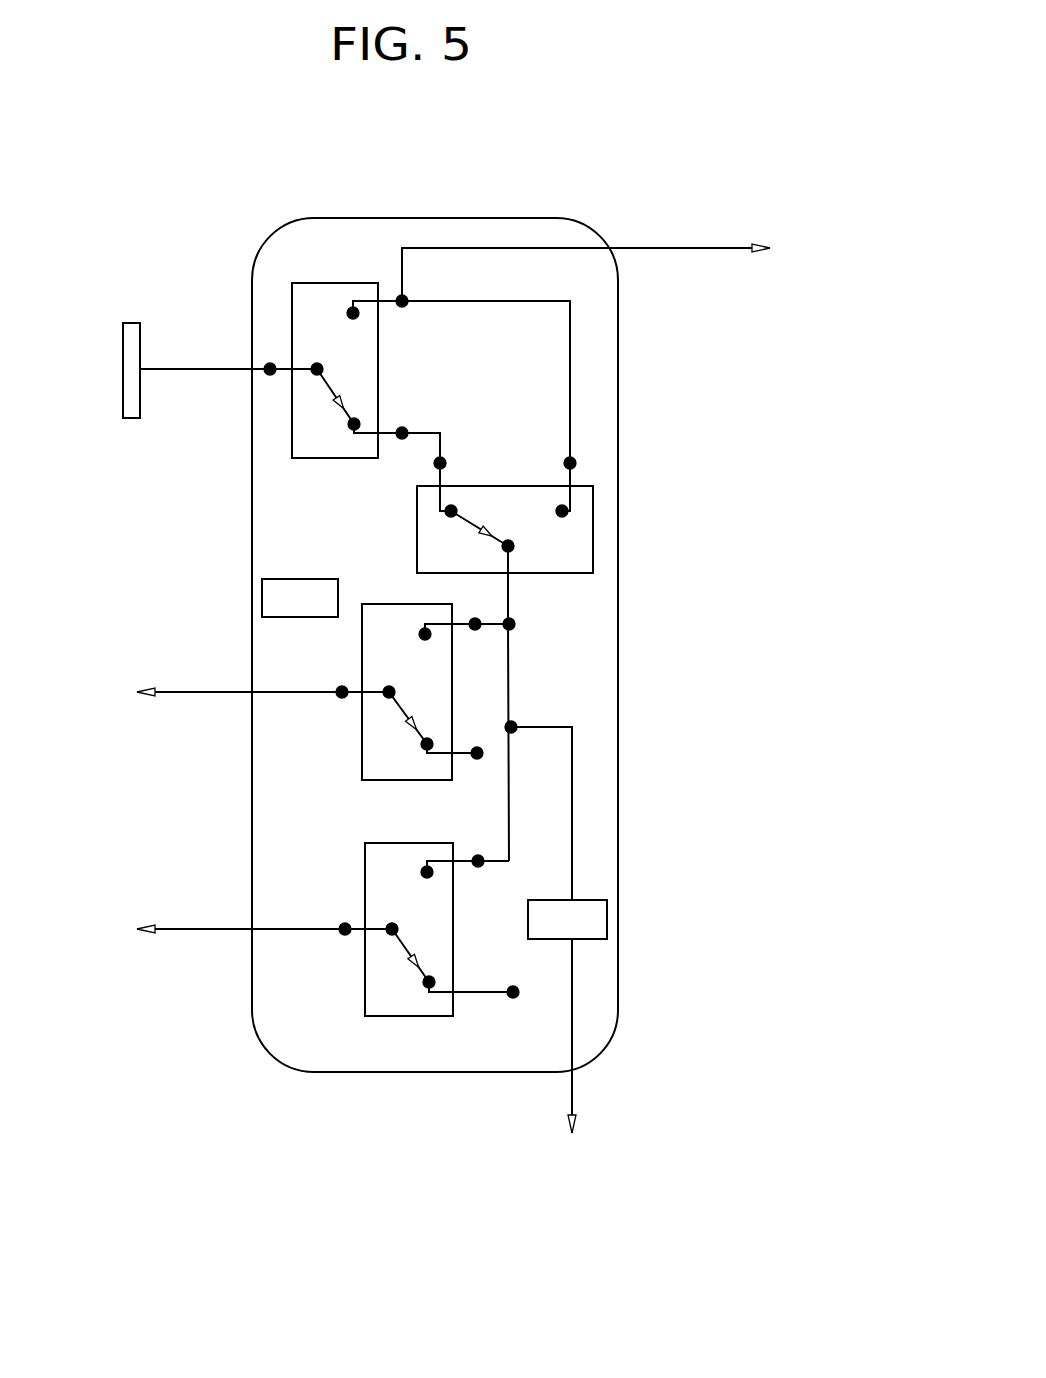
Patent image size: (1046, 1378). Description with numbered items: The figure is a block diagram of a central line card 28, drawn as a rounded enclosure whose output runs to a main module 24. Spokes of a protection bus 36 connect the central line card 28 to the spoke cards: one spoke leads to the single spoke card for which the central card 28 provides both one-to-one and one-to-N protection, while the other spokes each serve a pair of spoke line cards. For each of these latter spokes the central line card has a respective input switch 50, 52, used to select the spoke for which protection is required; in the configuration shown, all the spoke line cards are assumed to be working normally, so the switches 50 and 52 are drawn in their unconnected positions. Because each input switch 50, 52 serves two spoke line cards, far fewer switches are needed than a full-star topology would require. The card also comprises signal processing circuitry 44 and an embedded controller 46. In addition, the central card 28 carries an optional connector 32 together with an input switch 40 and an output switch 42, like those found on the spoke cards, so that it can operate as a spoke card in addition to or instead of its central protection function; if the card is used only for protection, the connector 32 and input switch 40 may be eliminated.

The main module 24 is at (580, 1192).
The central line card 28 is at (272, 241).
The connector 32 is at (142, 338).
The protection bus 36 is at (619, 248).
The input switch 40 is at (332, 458).
The output switch 42 is at (417, 508).
The signal processing circuitry 44 is at (607, 913).
The embedded controller 46 is at (262, 595).
The input switch 50 is at (405, 780).
The input switch 52 is at (407, 1016).